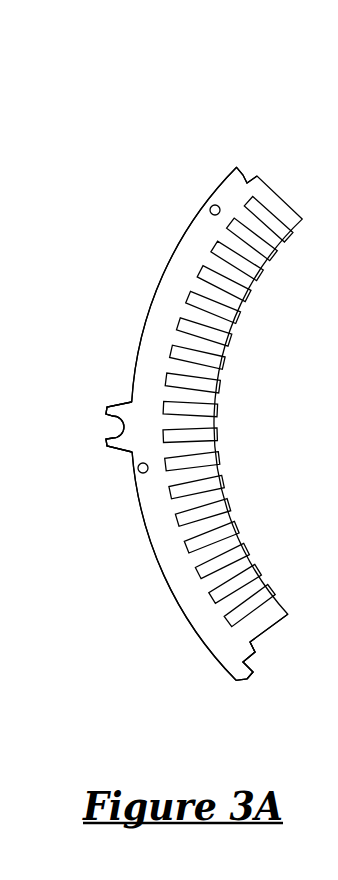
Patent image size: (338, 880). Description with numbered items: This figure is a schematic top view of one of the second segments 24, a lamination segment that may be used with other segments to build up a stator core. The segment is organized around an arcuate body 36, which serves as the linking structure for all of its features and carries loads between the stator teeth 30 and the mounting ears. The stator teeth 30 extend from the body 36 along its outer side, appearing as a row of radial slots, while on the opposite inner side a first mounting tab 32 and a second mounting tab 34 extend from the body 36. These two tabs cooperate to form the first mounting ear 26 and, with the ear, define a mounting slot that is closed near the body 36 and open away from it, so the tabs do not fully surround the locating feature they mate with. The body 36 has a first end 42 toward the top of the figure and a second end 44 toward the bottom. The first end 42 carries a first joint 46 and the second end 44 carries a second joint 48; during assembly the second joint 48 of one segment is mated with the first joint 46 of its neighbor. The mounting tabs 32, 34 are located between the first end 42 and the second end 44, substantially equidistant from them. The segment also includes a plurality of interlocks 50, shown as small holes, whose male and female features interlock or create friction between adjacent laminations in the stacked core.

The second segment 24 is at (243, 122).
The first mounting ear 26 is at (86, 433).
The stator teeth 30 is at (237, 545).
The first mounting tab 32 is at (110, 443).
The second mounting tab 34 is at (117, 407).
The body 36 is at (151, 299).
The first end 42 is at (220, 197).
The second end 44 is at (218, 645).
The first joint 46 is at (247, 181).
The second joint 48 is at (250, 680).
The interlocks 50 is at (140, 470).